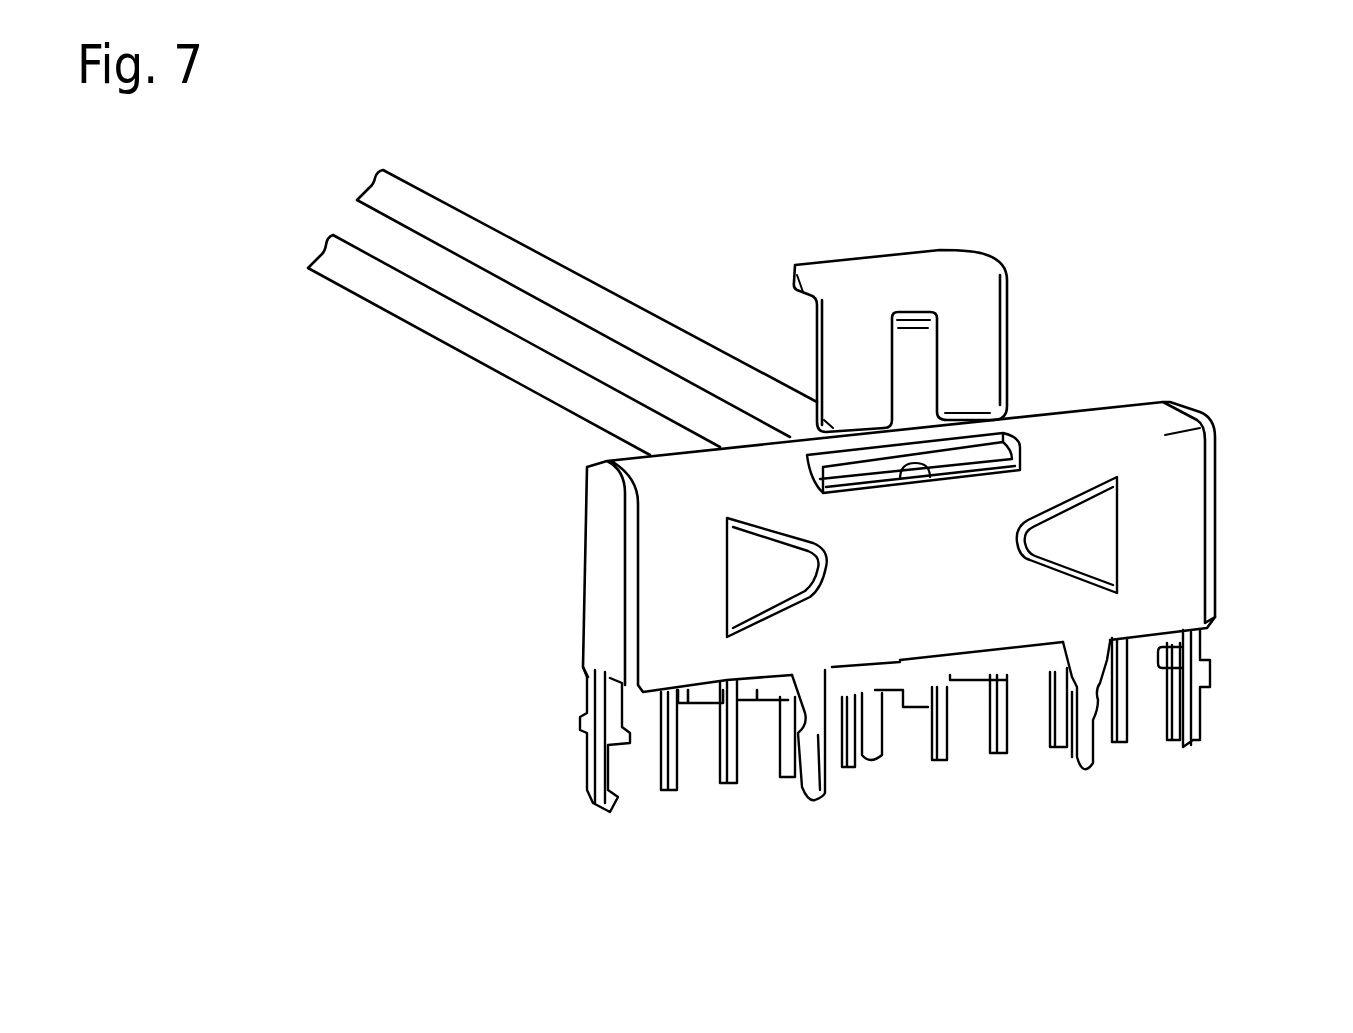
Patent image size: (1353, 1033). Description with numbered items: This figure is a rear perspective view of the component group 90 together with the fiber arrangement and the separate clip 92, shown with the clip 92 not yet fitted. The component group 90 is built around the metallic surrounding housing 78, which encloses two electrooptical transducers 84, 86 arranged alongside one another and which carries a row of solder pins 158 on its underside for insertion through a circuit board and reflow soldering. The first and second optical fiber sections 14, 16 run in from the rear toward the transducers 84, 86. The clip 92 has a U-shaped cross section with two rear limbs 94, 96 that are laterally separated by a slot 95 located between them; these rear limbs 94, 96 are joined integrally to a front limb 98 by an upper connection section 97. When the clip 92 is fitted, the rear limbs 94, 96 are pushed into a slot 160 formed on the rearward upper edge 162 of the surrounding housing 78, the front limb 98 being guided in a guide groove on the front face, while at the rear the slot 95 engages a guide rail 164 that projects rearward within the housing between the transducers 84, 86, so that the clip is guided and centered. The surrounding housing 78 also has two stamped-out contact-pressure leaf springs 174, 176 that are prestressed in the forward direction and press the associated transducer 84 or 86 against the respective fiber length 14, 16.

The first optical fiber section 14 is at (500, 373).
The second optical fiber section 16 is at (602, 287).
The surrounding housing 78 is at (1185, 567).
The electrooptical transducer 84 is at (703, 692).
The electrooptical transducer 86 is at (1042, 657).
The component group 90 is at (1217, 498).
The clip 92 is at (1008, 332).
The rear limb 94 is at (848, 380).
The slot 95 is at (913, 377).
The rear limb 96 is at (980, 377).
The upper connection section 97 is at (800, 295).
The front limb 98 is at (893, 347).
The solder pins 158 is at (613, 800).
The slot 160 is at (977, 457).
The rearward upper edge 162 is at (1165, 435).
The guide rail 164 is at (910, 470).
The contact-pressure leaf spring 174 is at (765, 572).
The contact-pressure leaf spring 176 is at (1070, 545).